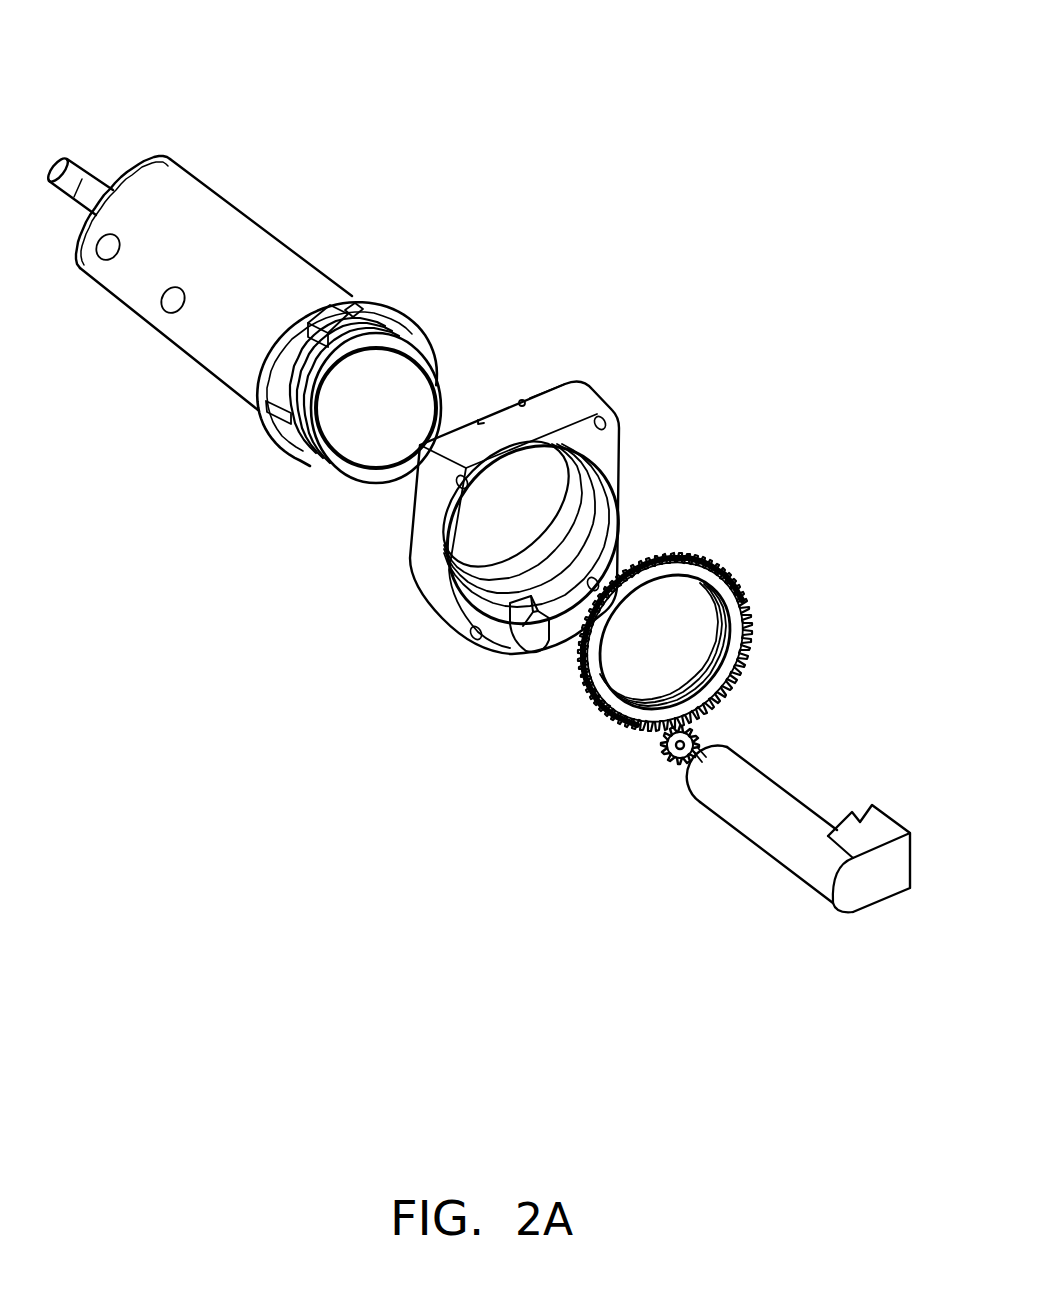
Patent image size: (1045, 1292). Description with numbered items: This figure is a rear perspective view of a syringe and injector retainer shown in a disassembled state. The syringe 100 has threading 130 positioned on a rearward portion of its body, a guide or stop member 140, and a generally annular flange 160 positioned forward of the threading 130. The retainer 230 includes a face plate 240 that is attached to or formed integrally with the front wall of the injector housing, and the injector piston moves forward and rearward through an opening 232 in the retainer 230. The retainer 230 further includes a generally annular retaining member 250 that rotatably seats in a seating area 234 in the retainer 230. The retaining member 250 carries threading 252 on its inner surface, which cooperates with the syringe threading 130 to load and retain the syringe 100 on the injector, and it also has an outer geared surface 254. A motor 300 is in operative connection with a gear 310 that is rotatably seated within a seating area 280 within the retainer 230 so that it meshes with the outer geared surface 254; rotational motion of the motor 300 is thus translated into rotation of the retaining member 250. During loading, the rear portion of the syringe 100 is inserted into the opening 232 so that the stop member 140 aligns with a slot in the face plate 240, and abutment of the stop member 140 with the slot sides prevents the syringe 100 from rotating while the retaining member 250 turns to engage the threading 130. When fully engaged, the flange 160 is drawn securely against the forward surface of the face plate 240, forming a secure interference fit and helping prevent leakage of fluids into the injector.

The syringe 100 is at (207, 136).
The threading 130 is at (315, 472).
The stop member 140 is at (328, 318).
The flange 160 is at (397, 302).
The retainer 230 is at (546, 535).
The opening 232 is at (490, 518).
The seating area 234 is at (603, 515).
The face plate 240 is at (555, 383).
The retaining member 250 is at (723, 603).
The threading 252 is at (717, 683).
The outer geared surface 254 is at (750, 630).
The seating area 280 is at (528, 643).
The motor 300 is at (737, 830).
The gear 310 is at (667, 758).